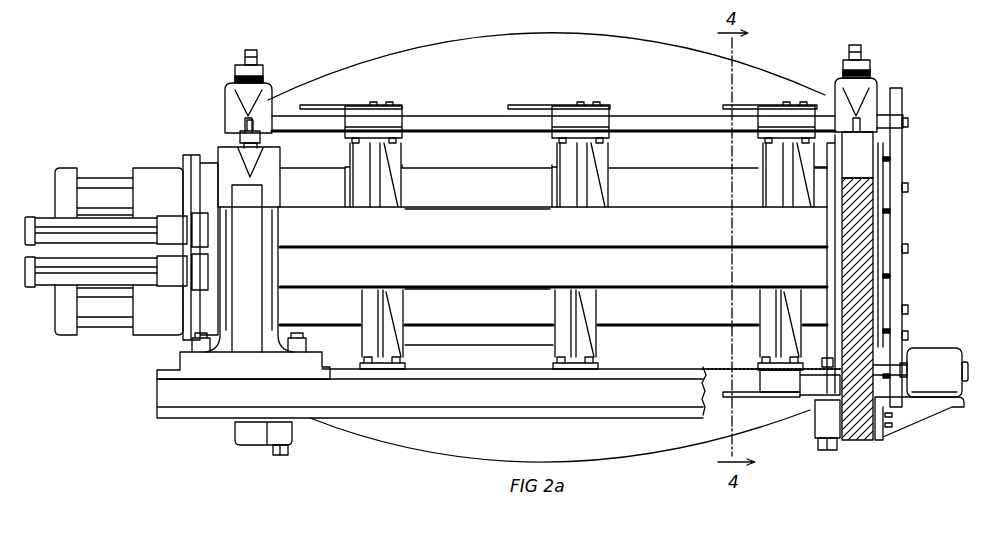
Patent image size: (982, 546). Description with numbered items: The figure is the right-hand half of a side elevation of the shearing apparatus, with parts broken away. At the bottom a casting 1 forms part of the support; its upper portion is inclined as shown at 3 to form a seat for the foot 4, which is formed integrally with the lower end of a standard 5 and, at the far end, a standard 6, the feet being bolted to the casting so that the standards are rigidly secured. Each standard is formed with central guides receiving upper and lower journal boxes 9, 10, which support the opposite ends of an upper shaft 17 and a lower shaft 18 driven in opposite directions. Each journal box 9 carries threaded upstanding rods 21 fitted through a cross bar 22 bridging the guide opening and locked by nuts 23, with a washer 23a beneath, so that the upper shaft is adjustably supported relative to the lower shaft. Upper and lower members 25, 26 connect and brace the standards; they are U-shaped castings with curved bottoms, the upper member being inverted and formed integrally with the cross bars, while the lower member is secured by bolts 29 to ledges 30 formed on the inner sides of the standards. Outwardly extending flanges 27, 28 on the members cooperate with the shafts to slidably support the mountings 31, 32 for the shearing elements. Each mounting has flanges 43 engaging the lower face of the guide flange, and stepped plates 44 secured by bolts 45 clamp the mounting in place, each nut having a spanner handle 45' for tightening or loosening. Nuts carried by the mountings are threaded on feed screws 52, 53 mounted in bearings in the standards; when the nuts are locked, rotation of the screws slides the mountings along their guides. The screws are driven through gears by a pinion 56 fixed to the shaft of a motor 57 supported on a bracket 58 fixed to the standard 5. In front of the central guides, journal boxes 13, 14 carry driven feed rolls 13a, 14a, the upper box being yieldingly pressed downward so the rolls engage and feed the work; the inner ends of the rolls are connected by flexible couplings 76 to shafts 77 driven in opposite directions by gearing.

The casting 1 is at (500, 393).
The inclined seat 3 is at (165, 374).
The foot 4 is at (207, 372).
The standard 5 is at (858, 148).
The standard 6 is at (250, 205).
The upper journal box 9 is at (272, 167).
The lower journal box 10 is at (272, 312).
The upper journal box 13 is at (272, 228).
The upper feed roll 13a is at (438, 228).
The lower journal box 14 is at (272, 274).
The lower feed roll 14a is at (500, 262).
The upper shaft 17 is at (510, 185).
The lower shaft 18 is at (425, 310).
The upstanding rod 21 is at (248, 48).
The cross bar 22 is at (240, 118).
The nut 23 is at (246, 67).
The washer 23a is at (240, 86).
The upper member 25 is at (546, 66).
The lower member 26 is at (560, 436).
The guide flange 27 is at (512, 125).
The guide flange 28 is at (723, 380).
The bolt 29 is at (280, 453).
The ledge 30 is at (285, 436).
The mounting 31 is at (586, 175).
The mounting 32 is at (581, 329).
The flange 43 is at (378, 135).
The stepped plate 44 is at (376, 120).
The bolt 45 is at (580, 151).
The handle 45' is at (747, 93).
The feed screw 52 is at (720, 133).
The feed screw 53 is at (730, 369).
The pinion 56 is at (905, 370).
The motor 57 is at (935, 352).
The bracket 58 is at (900, 420).
The flexible coupling 76 is at (200, 225).
The shaft 77 is at (118, 273).